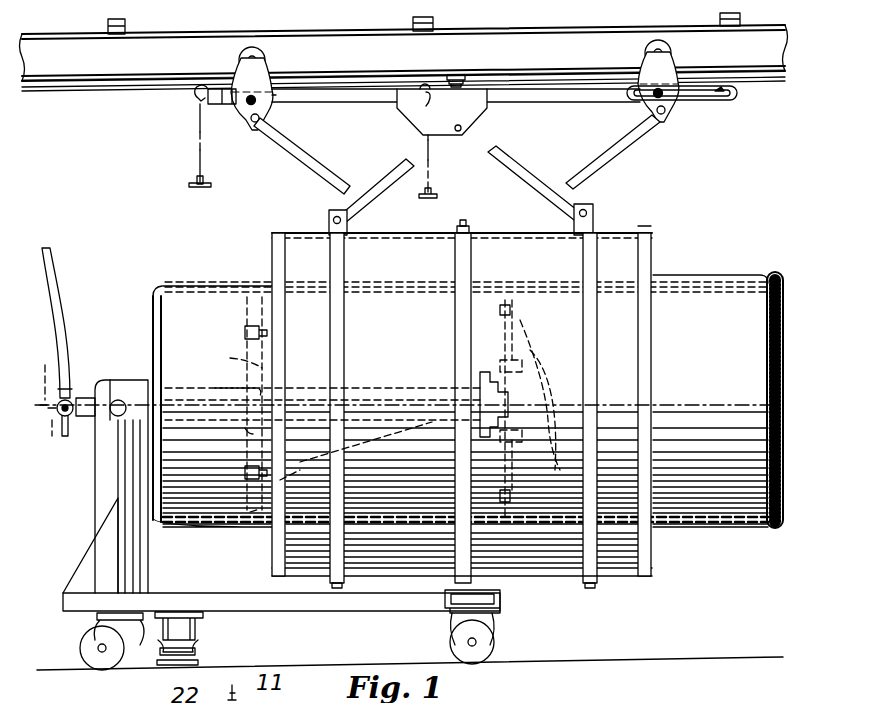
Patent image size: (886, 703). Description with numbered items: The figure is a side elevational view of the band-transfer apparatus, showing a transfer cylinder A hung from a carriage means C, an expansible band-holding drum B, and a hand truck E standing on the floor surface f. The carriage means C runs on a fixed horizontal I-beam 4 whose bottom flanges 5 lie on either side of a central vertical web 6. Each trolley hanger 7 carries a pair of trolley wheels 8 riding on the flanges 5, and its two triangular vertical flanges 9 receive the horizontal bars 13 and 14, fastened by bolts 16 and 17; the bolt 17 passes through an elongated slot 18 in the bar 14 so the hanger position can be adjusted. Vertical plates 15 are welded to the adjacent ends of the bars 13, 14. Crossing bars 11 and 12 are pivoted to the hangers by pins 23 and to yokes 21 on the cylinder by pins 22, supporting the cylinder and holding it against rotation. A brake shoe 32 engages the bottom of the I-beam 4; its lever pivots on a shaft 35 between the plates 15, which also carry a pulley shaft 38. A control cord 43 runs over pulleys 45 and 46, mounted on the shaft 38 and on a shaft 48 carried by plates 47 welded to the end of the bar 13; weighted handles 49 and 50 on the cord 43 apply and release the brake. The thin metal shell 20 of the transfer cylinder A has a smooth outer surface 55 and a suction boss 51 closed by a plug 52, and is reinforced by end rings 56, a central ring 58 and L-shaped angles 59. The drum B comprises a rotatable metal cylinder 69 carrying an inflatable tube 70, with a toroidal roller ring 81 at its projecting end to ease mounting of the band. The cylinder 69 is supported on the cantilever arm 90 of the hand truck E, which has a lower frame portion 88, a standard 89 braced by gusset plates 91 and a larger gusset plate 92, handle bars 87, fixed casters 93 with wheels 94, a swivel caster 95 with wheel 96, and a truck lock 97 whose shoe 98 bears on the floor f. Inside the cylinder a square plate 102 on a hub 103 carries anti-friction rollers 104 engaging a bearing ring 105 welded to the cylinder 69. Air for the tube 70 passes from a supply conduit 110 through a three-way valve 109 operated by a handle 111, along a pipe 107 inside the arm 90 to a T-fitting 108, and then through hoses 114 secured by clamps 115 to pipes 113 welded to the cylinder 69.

The I-beam 4 is at (68, 79).
The bottom flanges 5 is at (535, 71).
The central vertical web 6 is at (397, 64).
The trolley hanger 7 is at (266, 78).
The trolley wheels 8 is at (242, 57).
The vertical flanges 9 is at (249, 104).
The crossing bar 11 is at (378, 191).
The crossing bar 12 is at (311, 166).
The horizontal bar 13 is at (345, 102).
The horizontal bar 14 is at (545, 101).
The vertical plates 15 is at (478, 108).
The bolt 16 is at (268, 100).
The bolt 17 is at (664, 97).
The elongated slot 18 is at (727, 98).
The outer cylindrical metal shell 20 is at (570, 574).
The yokes 21 is at (347, 240).
The pivot pin 22 is at (329, 219).
The pivot pin 23 is at (254, 124).
The pressure pad or shoe 32 is at (461, 74).
The pivot pin or shaft 35 is at (446, 138).
The pulley shaft 38 is at (442, 112).
The control cord 43 is at (328, 77).
The pulley 45 is at (196, 96).
The pulley 46 is at (427, 84).
The vertical metal plates 47 is at (214, 90).
The horizontal shaft 48 is at (200, 114).
The handle 49 is at (210, 186).
The handle 50 is at (420, 198).
The annular boss 51 is at (474, 226).
The threaded plug 52 is at (466, 220).
The cylindrical outer surface 55 is at (638, 226).
The annular outer metal rings 56 is at (280, 562).
The central ring 58 is at (505, 572).
The annular angles 59 is at (600, 581).
The metal cylinder 69 is at (157, 293).
The inflatable tube 70 is at (690, 275).
The toroidal ring 81 is at (765, 428).
The horizontal bars 87 is at (118, 418).
The lower frame portion 88 is at (318, 612).
The vertical standard 89 is at (95, 486).
The cantilever arm 90 is at (366, 388).
The gusset plates 91 is at (80, 577).
The gusset plate 92 is at (360, 464).
The fixed casters 93 is at (500, 602).
The wheels 94 is at (496, 644).
The swivel caster 95 is at (97, 628).
The wheel 96 is at (80, 650).
The truck lock 97 is at (200, 632).
The shoe 98 is at (198, 661).
The square plate 102 is at (228, 353).
The annular hub member 103 is at (248, 433).
The anti-friction rollers 104 is at (245, 331).
The bearing ring 105 is at (256, 512).
The metal pipe 107 is at (235, 386).
The T-fitting 108 is at (510, 400).
The three-way valve 109 is at (78, 396).
The supply conduit 110 is at (50, 266).
The valve handle 111 is at (45, 395).
The pipes 113 is at (520, 314).
The flexible rubber hoses 114 is at (540, 345).
The clamps 115 is at (505, 366).
The transfer cylinder A is at (673, 233).
The expansible band-holding drum B is at (224, 274).
The carriage means C is at (182, 111).
The hand truck E is at (83, 533).
The floor surface f is at (604, 662).